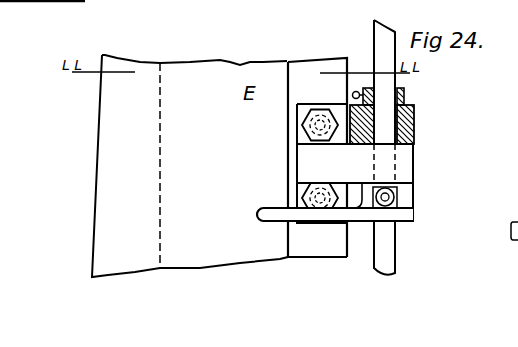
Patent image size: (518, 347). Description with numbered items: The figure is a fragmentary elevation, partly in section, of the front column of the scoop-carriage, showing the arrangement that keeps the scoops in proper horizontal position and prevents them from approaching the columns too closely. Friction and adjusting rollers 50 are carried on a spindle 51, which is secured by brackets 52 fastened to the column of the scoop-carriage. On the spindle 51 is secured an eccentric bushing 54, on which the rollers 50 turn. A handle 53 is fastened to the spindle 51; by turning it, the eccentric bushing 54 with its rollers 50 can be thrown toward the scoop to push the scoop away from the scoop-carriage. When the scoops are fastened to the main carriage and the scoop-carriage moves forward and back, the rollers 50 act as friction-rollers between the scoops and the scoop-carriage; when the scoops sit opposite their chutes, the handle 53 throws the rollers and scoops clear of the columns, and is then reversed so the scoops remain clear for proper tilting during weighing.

The friction and adjusting roller 50 is at (416, 125).
The spindle 51 is at (403, 250).
The bracket 52 is at (413, 167).
The handle 53 is at (413, 205).
The eccentric bushing 54 is at (406, 101).